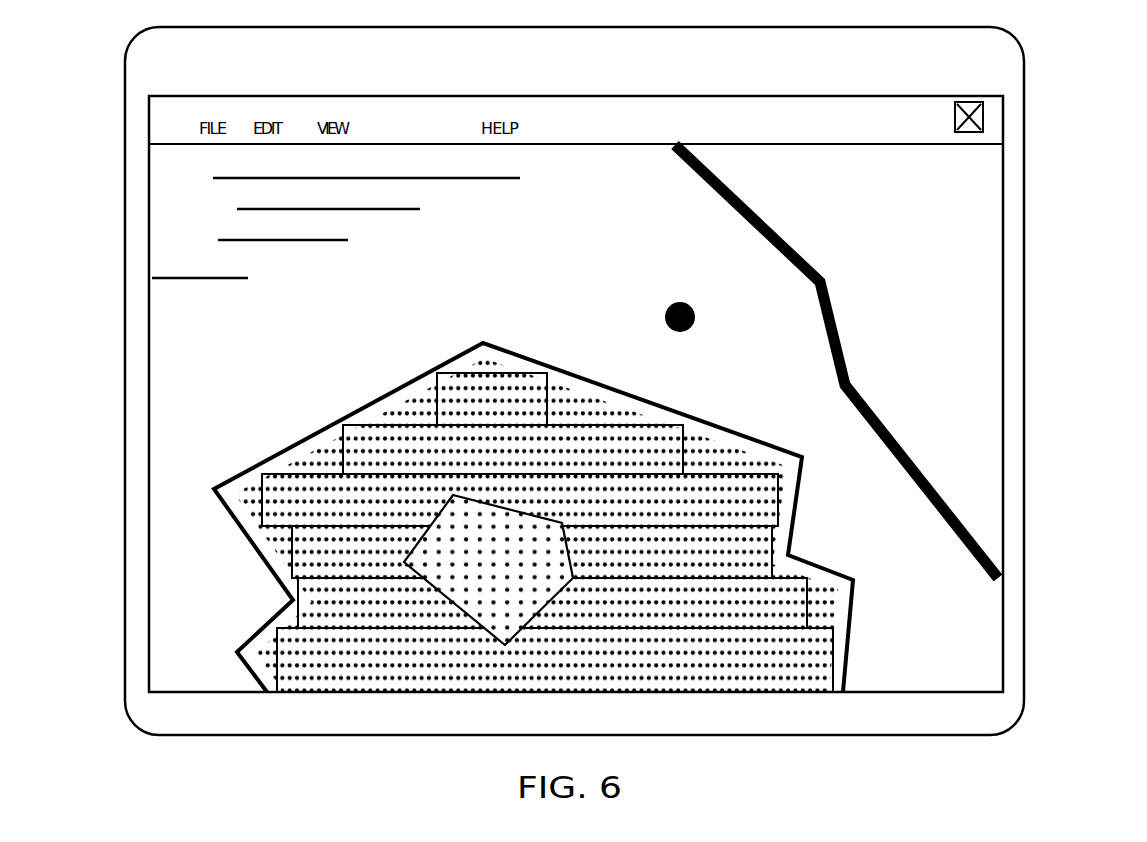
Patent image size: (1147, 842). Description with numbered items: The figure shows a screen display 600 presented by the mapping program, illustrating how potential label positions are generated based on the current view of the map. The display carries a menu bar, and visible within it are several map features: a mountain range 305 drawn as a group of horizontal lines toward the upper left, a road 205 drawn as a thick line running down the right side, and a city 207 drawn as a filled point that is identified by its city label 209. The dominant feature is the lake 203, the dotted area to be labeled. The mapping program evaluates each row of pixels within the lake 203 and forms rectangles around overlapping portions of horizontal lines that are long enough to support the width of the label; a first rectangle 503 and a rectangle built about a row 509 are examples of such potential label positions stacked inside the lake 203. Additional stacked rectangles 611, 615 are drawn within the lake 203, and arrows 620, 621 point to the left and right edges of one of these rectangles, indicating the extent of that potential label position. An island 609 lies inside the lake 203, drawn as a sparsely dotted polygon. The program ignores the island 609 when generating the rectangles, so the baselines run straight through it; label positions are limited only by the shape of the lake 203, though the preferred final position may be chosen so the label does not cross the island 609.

The screen display 600 is at (1047, 255).
The mountain range 305 is at (260, 247).
The road 205 is at (783, 237).
The city 207 is at (695, 330).
The city label 209 is at (616, 290).
The lake 203 is at (857, 600).
The row 509 is at (450, 375).
The first rectangle 503 is at (553, 392).
The second cell region 611 is at (278, 477).
The left edge of cell 620 is at (258, 496).
The right edge of cell 621 is at (783, 508).
The lower cell regions 615 is at (273, 530).
The island 609 is at (502, 608).